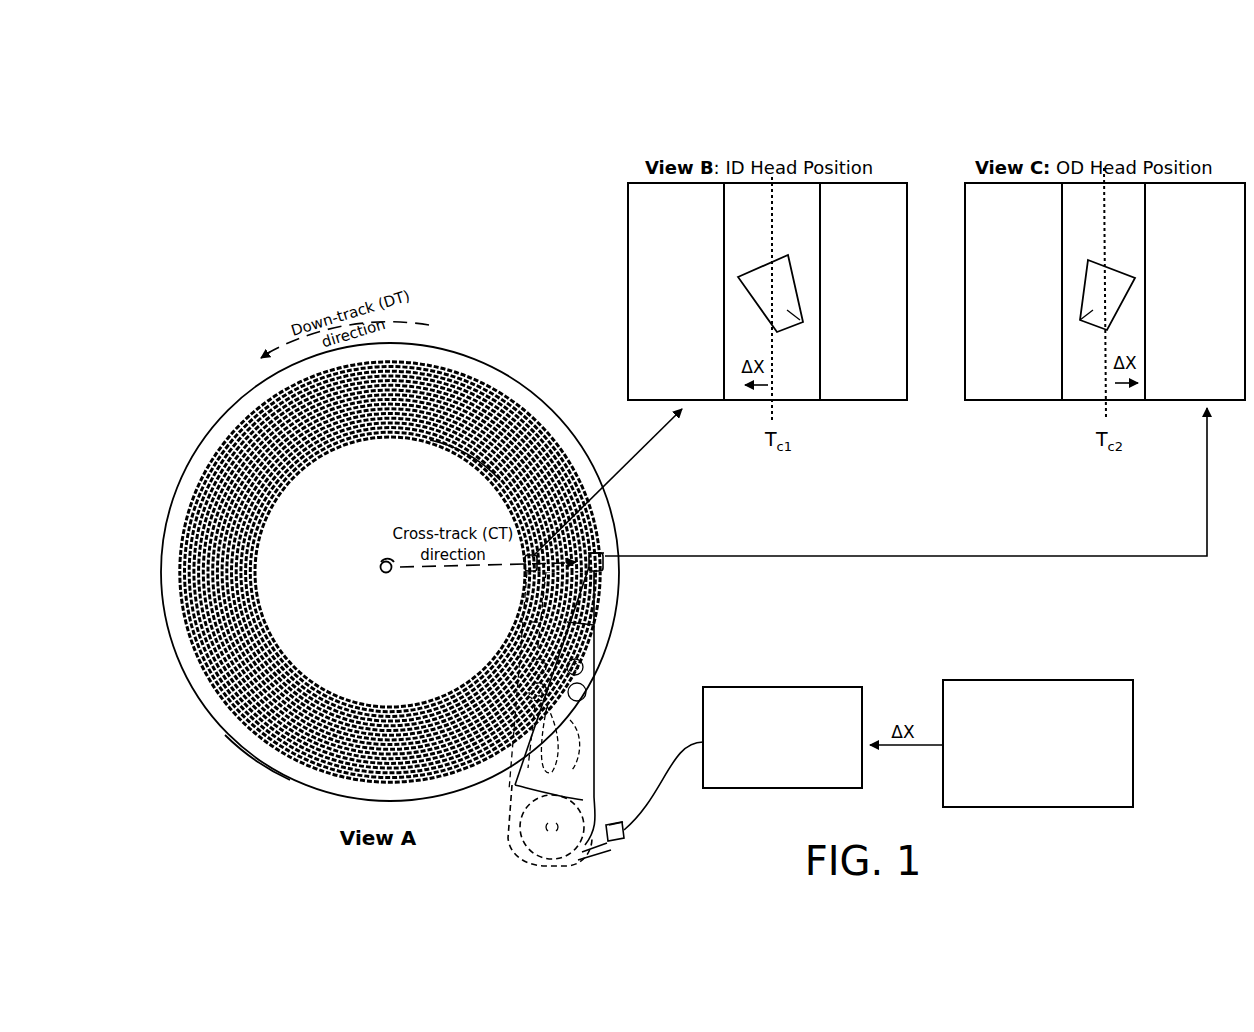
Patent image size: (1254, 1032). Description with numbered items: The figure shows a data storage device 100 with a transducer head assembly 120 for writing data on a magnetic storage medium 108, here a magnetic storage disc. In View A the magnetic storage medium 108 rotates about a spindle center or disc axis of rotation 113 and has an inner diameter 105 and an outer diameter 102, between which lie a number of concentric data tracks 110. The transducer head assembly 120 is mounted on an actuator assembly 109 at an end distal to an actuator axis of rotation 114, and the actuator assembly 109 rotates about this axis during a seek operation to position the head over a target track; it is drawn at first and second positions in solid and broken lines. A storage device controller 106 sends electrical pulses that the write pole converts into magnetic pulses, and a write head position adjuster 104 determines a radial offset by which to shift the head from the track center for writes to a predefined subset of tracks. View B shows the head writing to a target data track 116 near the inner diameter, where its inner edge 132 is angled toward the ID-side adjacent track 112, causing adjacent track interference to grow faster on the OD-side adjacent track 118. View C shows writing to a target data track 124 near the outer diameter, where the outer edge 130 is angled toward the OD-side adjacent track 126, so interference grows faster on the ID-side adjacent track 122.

The data storage device 100 is at (215, 85).
The outer diameter 102 is at (235, 426).
The write head position adjuster 104 is at (1038, 743).
The inner diameter 105 is at (447, 450).
The storage device controller 106 is at (743, 758).
The magnetic storage medium 108 is at (247, 757).
The actuator assembly 109 is at (595, 730).
The data tracks 110 is at (210, 686).
The ID-side adjacent track 112 is at (676, 291).
The disc axis of rotation 113 is at (379, 565).
The actuator axis of rotation 114 is at (510, 827).
The target data track 116 is at (772, 291).
The OD-side adjacent track 118 is at (863, 291).
The transducer head assembly 120 is at (604, 565).
The ID-side adjacent track 122 is at (1013, 291).
The target data track 124 is at (1103, 291).
The OD-side adjacent track 126 is at (1195, 291).
The outer edge 130 is at (593, 849).
The inner edge 132 is at (753, 302).